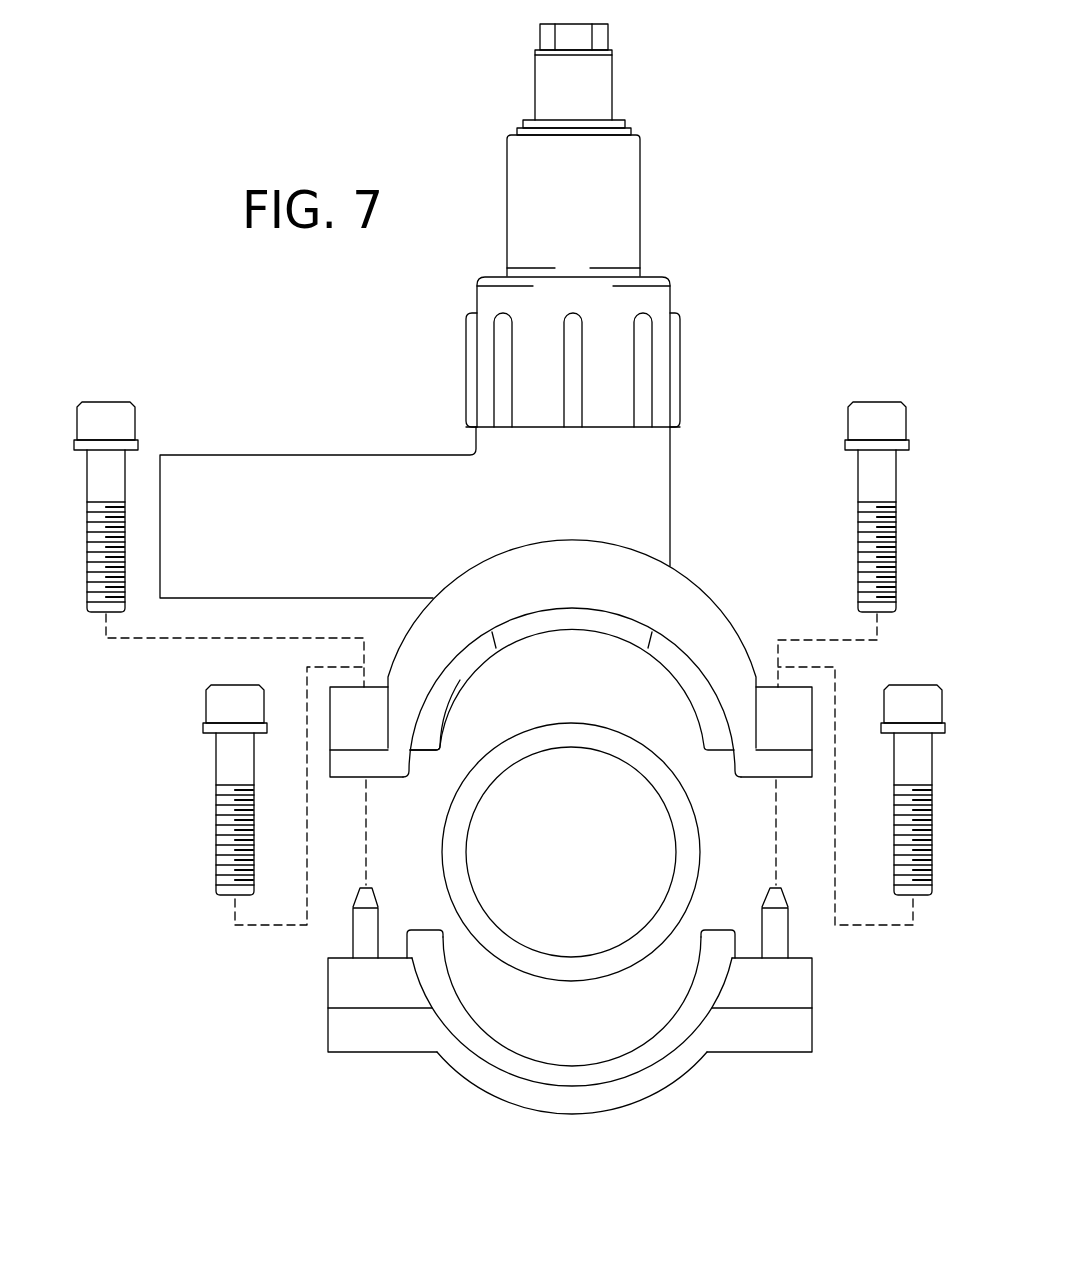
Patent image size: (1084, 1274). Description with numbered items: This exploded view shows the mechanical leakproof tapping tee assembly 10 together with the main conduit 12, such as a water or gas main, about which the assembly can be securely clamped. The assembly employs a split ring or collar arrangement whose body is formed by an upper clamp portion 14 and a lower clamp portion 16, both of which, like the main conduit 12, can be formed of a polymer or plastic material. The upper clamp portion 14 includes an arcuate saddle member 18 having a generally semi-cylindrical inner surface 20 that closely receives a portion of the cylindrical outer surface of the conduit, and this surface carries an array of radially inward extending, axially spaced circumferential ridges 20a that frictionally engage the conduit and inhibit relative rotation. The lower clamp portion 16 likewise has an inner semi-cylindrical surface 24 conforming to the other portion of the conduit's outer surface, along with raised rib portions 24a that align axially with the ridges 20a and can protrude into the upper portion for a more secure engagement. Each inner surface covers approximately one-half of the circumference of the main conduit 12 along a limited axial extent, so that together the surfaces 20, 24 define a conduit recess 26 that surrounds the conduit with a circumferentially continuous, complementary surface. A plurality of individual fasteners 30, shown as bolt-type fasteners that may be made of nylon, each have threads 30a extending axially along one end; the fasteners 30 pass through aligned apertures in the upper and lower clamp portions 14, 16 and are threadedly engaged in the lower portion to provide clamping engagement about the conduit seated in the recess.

The tapping tee assembly 10 is at (220, 988).
The main conduit 12 is at (690, 862).
The upper clamp portion 14 is at (490, 573).
The lower clamp portion 16 is at (395, 1030).
The arcuate saddle member 18 is at (735, 712).
The inner surface 20 is at (677, 655).
The ridges 20a is at (448, 708).
The inner semi-cylindrical surface 24 is at (435, 990).
The raised rib portions 24a is at (665, 1030).
The conduit recess 26 is at (562, 1018).
The fasteners 30 is at (112, 480).
The threads 30a is at (97, 608).